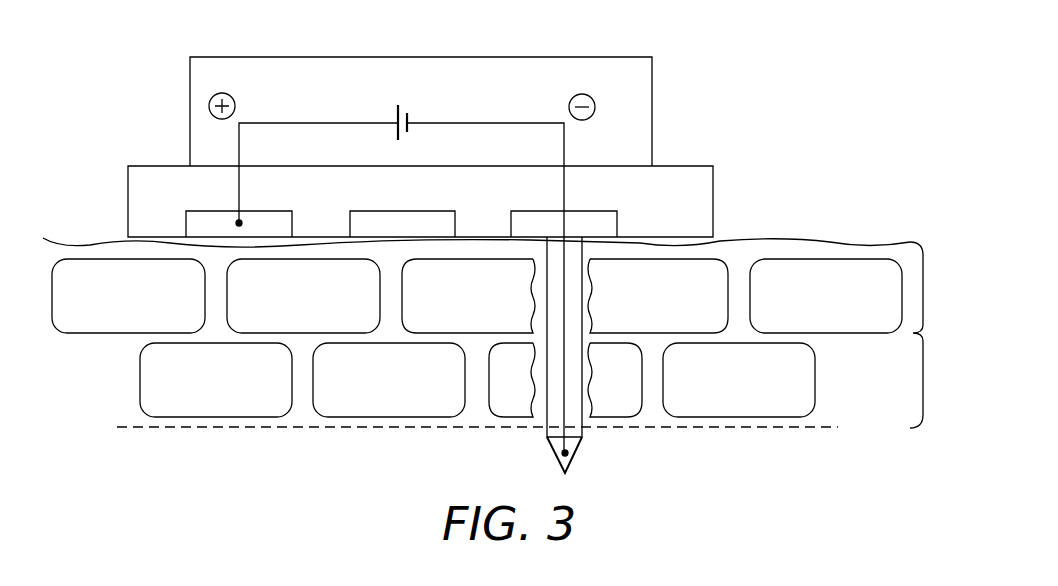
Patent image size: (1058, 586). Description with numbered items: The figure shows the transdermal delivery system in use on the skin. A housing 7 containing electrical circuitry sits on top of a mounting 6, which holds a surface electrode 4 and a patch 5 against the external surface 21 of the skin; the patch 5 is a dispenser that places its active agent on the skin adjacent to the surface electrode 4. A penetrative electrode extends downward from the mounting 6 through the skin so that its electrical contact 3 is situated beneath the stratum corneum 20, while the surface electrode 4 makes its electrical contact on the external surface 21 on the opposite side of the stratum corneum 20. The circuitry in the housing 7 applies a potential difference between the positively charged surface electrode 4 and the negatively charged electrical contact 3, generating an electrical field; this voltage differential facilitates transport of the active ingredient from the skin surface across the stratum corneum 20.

The electrical contact 3 is at (580, 460).
The surface electrode 4 is at (197, 218).
The patch 5 is at (439, 220).
The mounting 6 is at (683, 214).
The housing 7 is at (653, 68).
The stratum corneum 20 is at (507, 335).
The external surface 21 is at (70, 242).